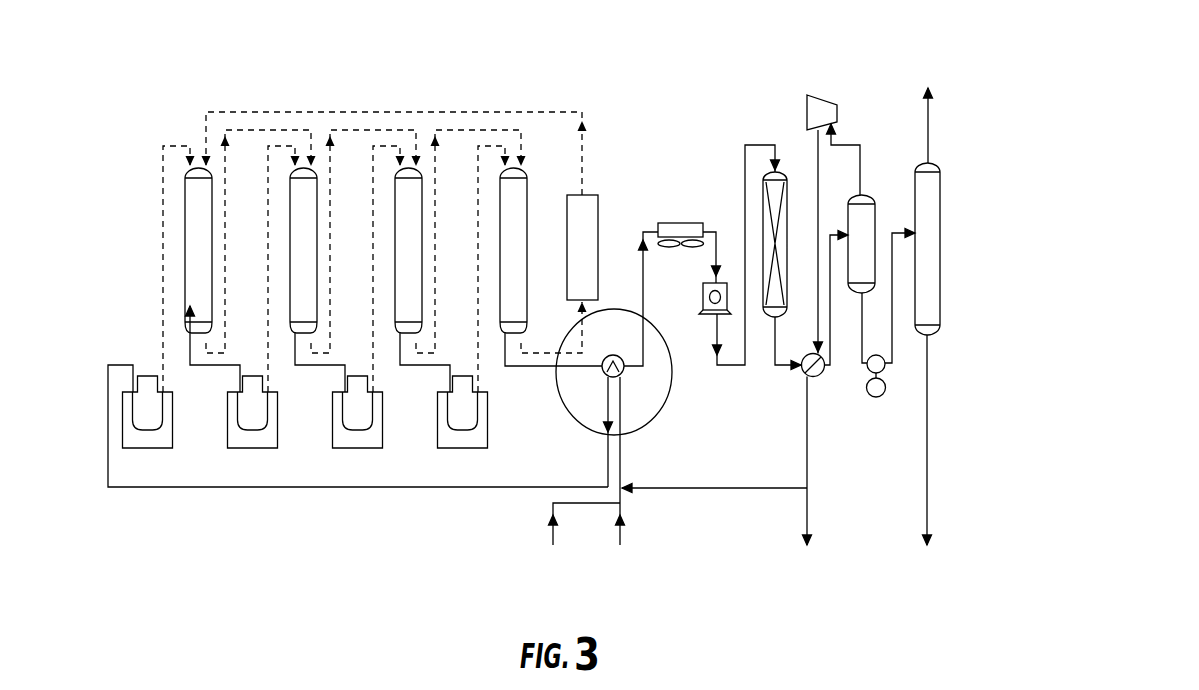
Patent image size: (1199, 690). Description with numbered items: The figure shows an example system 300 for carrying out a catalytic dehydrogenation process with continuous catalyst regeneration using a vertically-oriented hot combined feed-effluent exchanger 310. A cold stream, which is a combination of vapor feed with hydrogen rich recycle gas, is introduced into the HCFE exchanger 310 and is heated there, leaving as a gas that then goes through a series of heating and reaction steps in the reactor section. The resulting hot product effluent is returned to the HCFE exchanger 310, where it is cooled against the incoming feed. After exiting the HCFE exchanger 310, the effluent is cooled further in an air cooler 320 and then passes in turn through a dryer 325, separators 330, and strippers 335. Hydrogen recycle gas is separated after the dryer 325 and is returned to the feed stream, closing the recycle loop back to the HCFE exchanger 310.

The system 300 is at (541, 56).
The HCFE exchanger 310 is at (705, 423).
The air cooler 320 is at (701, 221).
The dryer 325 is at (790, 142).
The separators 330 is at (898, 142).
The strippers 335 is at (1000, 248).